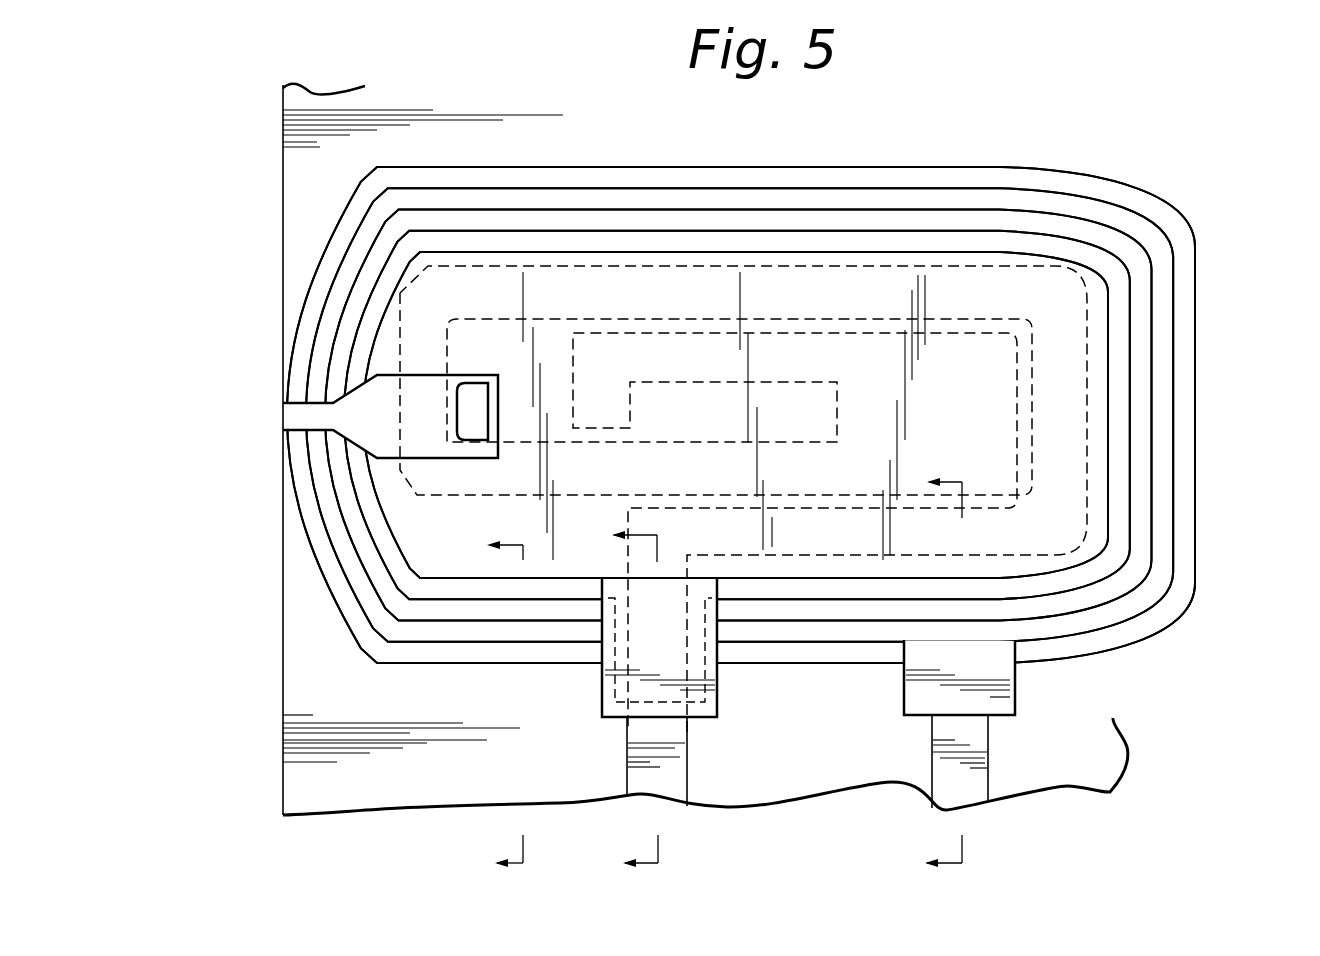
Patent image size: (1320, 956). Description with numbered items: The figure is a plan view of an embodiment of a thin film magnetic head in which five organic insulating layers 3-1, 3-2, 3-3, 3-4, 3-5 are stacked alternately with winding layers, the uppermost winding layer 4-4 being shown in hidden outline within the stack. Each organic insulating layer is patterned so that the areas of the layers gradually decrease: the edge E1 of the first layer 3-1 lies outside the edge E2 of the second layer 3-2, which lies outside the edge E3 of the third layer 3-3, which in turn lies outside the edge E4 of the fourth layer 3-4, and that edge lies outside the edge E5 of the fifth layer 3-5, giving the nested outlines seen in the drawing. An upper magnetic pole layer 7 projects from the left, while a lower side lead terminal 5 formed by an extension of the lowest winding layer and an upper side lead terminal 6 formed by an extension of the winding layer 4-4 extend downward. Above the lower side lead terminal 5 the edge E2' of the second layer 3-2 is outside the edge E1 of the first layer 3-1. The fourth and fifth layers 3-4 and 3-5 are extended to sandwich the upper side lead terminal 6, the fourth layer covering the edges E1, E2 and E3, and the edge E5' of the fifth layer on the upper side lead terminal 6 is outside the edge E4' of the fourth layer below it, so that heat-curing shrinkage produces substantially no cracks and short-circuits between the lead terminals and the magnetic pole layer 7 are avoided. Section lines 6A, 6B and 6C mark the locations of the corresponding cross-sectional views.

The organic insulating layer 3-1 is at (1073, 182).
The organic insulating layer 3-2 is at (1140, 233).
The organic insulating layer 3-3 is at (1142, 297).
The organic insulating layer 3-4 is at (1120, 352).
The organic insulating layer 3-5 is at (1100, 437).
The edge of organic insulating layer 3-1 E1 is at (298, 502).
The edge of organic insulating layer 3-2 E2 is at (693, 415).
The edge of organic insulating layer 3-3 E3 is at (367, 573).
The edge of organic insulating layer 3-4 E4 is at (737, 470).
The edge of organic insulating layer 3-5 E5 is at (735, 480).
The edge of organic insulating layer 3-4 below the upper side lead terminal E4' is at (702, 655).
The edge of organic insulating layer 3-5 on the upper side lead terminal E5' is at (683, 668).
The edge of organic insulating layer 3-2 on the lower side lead terminal E2' is at (994, 691).
The upper magnetic pole layer 7 is at (300, 420).
The upper side lead terminal 6 is at (673, 784).
The lower side lead terminal 5 is at (977, 782).
The winding layer 4-4 is at (602, 302).
The cross-sectional view line A—A 6A is at (481, 705).
The cross-sectional view line B—B 6B is at (611, 702).
The cross-sectional view line C—C 6C is at (921, 674).